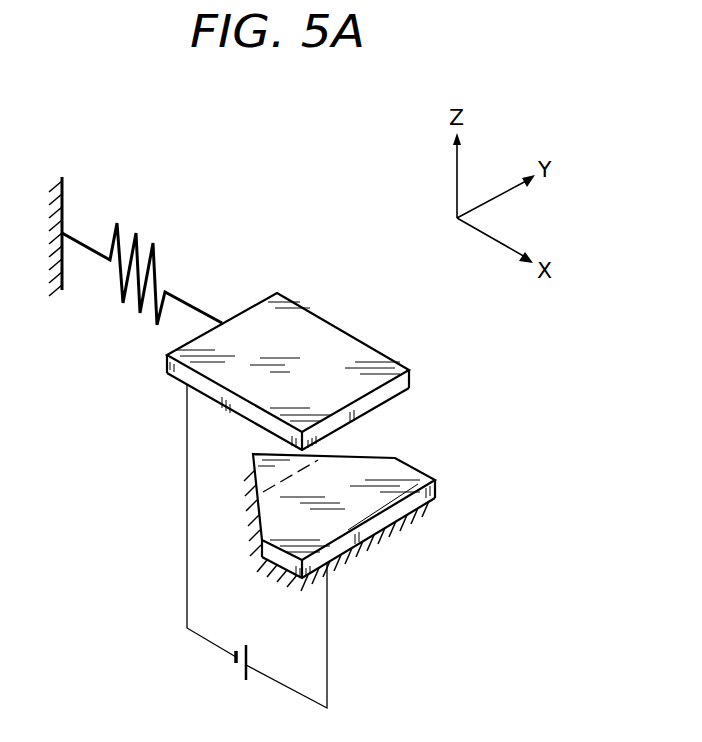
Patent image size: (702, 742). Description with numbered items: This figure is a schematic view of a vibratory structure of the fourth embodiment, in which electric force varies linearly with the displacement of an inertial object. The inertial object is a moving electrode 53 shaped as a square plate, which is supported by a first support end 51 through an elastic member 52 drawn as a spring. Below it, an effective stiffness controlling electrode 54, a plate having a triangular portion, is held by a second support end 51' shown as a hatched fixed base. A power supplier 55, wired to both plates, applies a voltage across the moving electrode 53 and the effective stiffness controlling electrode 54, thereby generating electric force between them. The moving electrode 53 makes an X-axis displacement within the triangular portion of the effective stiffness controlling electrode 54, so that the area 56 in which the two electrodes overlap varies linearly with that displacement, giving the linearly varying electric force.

The first support end 51 is at (70, 190).
The elastic member 52 is at (157, 278).
The moving electrode 53 is at (332, 358).
The effective stiffness controlling electrode 54 is at (420, 473).
The second support end 51' is at (412, 530).
The power supplier 55 is at (248, 657).
The area 56 is at (252, 465).